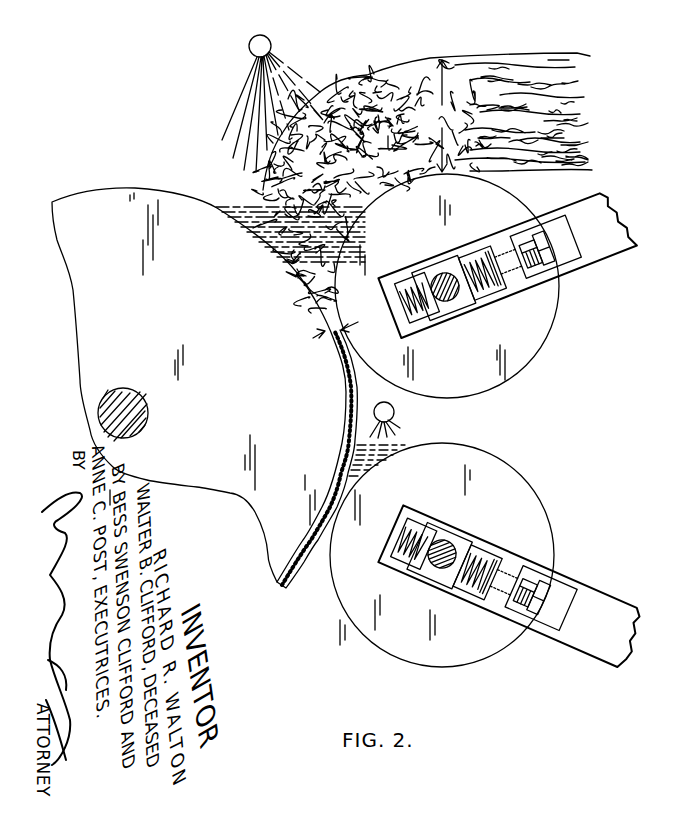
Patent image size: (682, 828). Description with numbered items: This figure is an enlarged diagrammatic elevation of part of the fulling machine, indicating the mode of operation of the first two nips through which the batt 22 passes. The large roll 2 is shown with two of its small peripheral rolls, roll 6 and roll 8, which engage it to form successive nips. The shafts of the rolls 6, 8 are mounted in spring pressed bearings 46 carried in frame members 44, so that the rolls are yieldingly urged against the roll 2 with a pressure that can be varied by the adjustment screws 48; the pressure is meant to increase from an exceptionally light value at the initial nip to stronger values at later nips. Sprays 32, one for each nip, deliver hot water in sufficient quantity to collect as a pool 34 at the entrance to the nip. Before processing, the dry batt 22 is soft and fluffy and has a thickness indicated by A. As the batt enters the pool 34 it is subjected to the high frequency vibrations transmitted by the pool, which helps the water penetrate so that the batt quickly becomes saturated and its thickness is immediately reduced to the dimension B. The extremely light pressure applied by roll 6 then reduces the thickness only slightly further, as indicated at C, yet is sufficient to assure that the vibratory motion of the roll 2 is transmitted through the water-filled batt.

The large roll 2 is at (105, 200).
The roll 6 is at (513, 358).
The roll 8 is at (500, 475).
The batt 22 is at (377, 74).
The sprays 32 is at (245, 48).
The pool 34 is at (258, 210).
The frame members 44 is at (608, 232).
The spring pressed bearings 46 is at (452, 302).
The adjustment screws 48 is at (548, 257).
The thickness of dry batt A is at (442, 116).
The thickness after wetting B is at (320, 300).
The thickness after first nip C is at (327, 335).